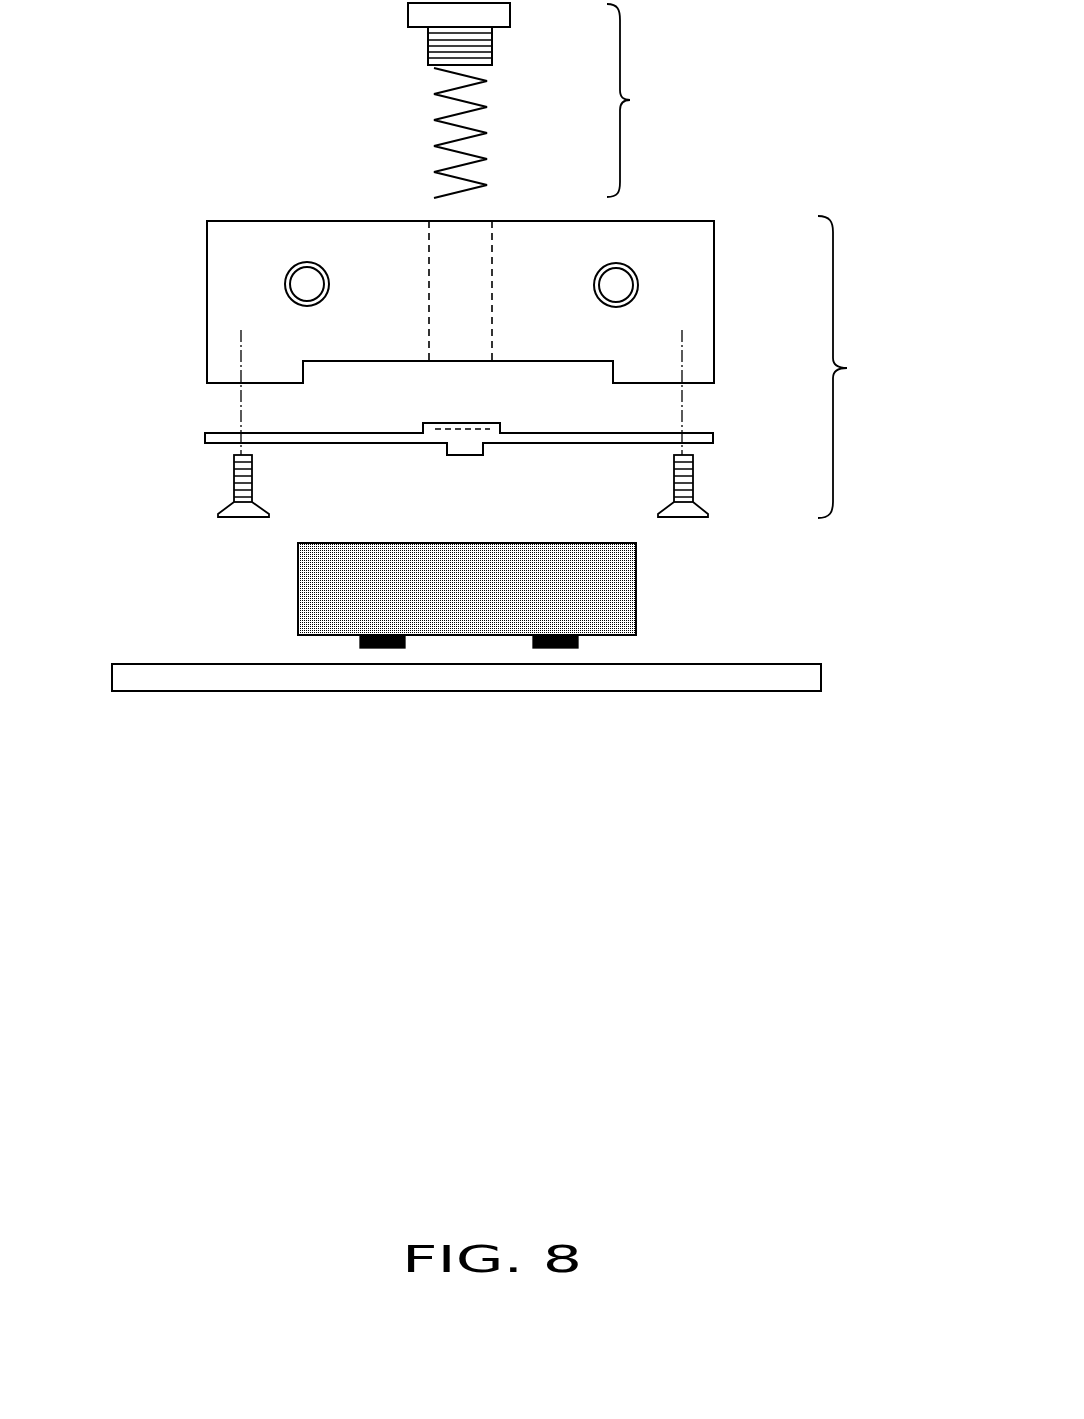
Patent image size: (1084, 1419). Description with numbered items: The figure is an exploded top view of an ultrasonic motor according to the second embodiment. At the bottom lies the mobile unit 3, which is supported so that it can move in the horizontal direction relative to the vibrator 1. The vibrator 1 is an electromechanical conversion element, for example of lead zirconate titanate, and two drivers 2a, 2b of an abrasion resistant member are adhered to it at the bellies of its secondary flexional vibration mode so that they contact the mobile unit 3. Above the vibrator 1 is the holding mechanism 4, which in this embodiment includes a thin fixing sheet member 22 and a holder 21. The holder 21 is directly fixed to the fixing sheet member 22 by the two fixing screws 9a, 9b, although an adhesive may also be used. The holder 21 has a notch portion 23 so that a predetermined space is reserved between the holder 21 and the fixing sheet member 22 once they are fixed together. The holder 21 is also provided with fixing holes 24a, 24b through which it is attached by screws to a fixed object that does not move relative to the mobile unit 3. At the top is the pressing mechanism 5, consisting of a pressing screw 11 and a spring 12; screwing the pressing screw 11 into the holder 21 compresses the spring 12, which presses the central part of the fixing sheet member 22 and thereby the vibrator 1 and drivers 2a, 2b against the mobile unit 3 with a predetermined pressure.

The vibrator 1 is at (637, 592).
The driver 2a is at (578, 642).
The driver 2b is at (360, 645).
The mobile unit 3 is at (787, 663).
The holding mechanism 4 is at (847, 367).
The pressing mechanism 5 is at (635, 100).
The fixing screw 9a is at (708, 516).
The fixing screw 9b is at (228, 513).
The pressing screw 11 is at (512, 14).
The spring 12 is at (480, 160).
The holder 21 is at (714, 278).
The fixing sheet member 22 is at (714, 434).
The notch portion 23 is at (348, 375).
The fixing hole 24a is at (620, 263).
The fixing hole 24b is at (300, 263).